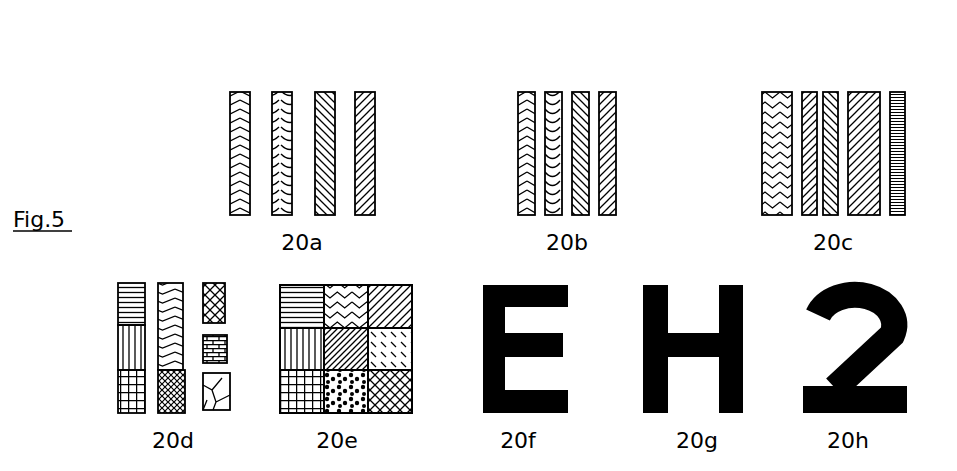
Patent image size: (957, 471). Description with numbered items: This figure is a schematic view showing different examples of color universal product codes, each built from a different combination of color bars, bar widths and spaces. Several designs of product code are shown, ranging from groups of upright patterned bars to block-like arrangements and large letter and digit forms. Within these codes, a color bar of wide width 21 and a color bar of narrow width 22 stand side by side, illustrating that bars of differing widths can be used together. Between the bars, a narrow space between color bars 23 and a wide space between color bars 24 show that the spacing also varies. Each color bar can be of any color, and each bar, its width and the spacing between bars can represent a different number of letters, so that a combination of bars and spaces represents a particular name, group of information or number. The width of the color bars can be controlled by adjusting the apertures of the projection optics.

The color bar of wide width 21 is at (863, 90).
The color bar of narrow width 22 is at (810, 90).
The narrow space between color bars 23 is at (539, 90).
The wide space between color bars 24 is at (303, 90).